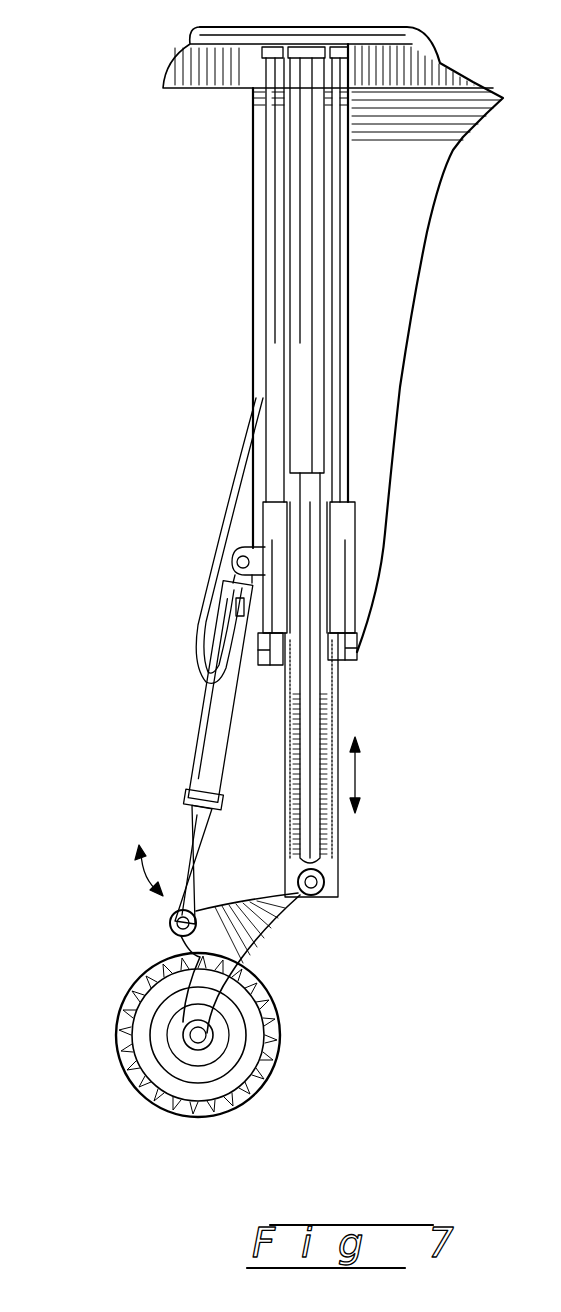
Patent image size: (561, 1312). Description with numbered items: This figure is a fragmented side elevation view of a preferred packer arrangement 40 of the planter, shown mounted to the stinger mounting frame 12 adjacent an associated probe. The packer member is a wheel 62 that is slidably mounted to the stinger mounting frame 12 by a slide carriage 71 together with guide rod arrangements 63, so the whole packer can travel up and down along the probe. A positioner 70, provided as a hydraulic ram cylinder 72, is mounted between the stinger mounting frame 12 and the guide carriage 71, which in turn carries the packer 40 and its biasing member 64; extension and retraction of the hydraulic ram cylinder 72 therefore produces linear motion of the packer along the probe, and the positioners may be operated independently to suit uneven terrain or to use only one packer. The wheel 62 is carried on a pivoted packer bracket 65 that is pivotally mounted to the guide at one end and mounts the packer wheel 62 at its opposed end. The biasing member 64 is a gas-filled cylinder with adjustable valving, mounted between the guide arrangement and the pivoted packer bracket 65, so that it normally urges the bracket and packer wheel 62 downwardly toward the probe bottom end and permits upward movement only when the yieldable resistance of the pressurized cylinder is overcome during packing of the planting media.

The stinger mounting frame 12 is at (432, 233).
The packer arrangement 40 is at (302, 1013).
The wheel 62 is at (143, 1072).
The guide rod arrangements 63 is at (343, 460).
The biasing member 64 is at (217, 743).
The packer bracket 65 is at (280, 920).
The positioner 70 is at (296, 172).
The slide carriage 71 is at (347, 580).
The hydraulic ram cylinder 72 is at (308, 276).